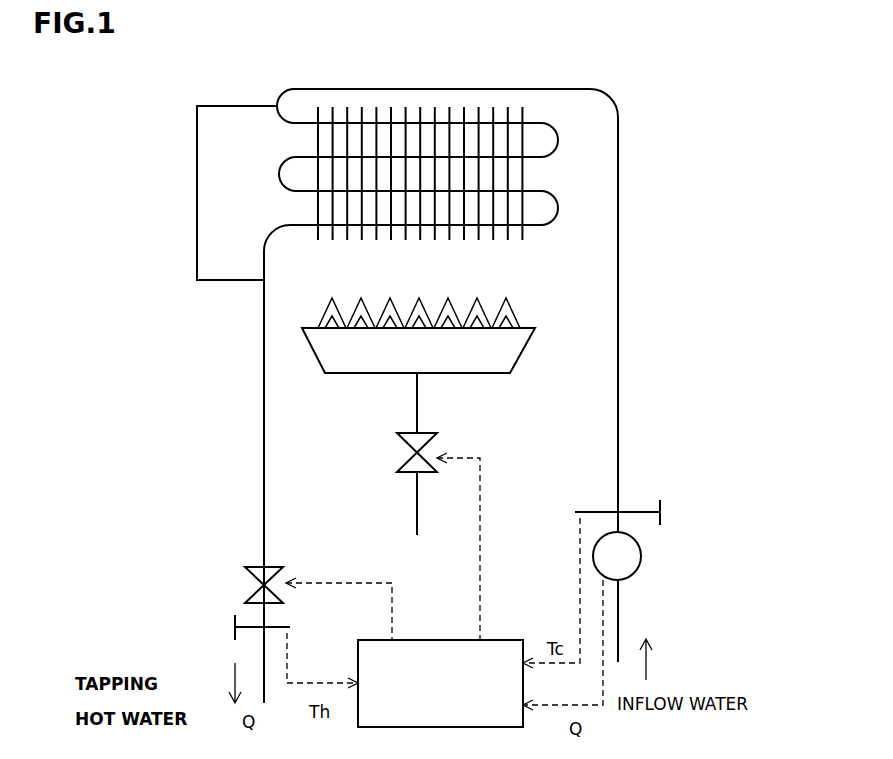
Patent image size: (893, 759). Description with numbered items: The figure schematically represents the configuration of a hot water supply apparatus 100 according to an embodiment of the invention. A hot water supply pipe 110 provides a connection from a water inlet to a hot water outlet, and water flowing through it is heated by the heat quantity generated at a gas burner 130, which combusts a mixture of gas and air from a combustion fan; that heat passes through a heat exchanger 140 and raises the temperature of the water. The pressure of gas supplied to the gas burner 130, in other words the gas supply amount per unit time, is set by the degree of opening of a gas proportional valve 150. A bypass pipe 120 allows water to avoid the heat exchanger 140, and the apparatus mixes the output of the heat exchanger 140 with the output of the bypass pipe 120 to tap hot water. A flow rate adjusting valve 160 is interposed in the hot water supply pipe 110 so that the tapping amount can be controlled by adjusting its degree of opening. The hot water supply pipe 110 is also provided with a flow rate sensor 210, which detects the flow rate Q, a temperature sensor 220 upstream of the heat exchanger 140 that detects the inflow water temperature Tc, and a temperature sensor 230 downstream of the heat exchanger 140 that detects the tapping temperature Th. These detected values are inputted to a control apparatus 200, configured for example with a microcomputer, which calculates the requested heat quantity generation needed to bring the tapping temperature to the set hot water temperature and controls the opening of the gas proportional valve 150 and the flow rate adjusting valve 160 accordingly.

The hot water supply apparatus 100 is at (750, 83).
The hot water supply pipe 110 is at (618, 310).
The bypass pipe 120 is at (196, 193).
The gas burner 130 is at (523, 352).
The heat exchanger 140 is at (522, 228).
The gas proportional valve 150 is at (412, 432).
The flow rate adjusting valve 160 is at (258, 566).
The control apparatus 200 is at (480, 727).
The flow rate sensor 210 is at (636, 574).
The temperature sensor 220 is at (640, 511).
The temperature sensor 230 is at (256, 624).